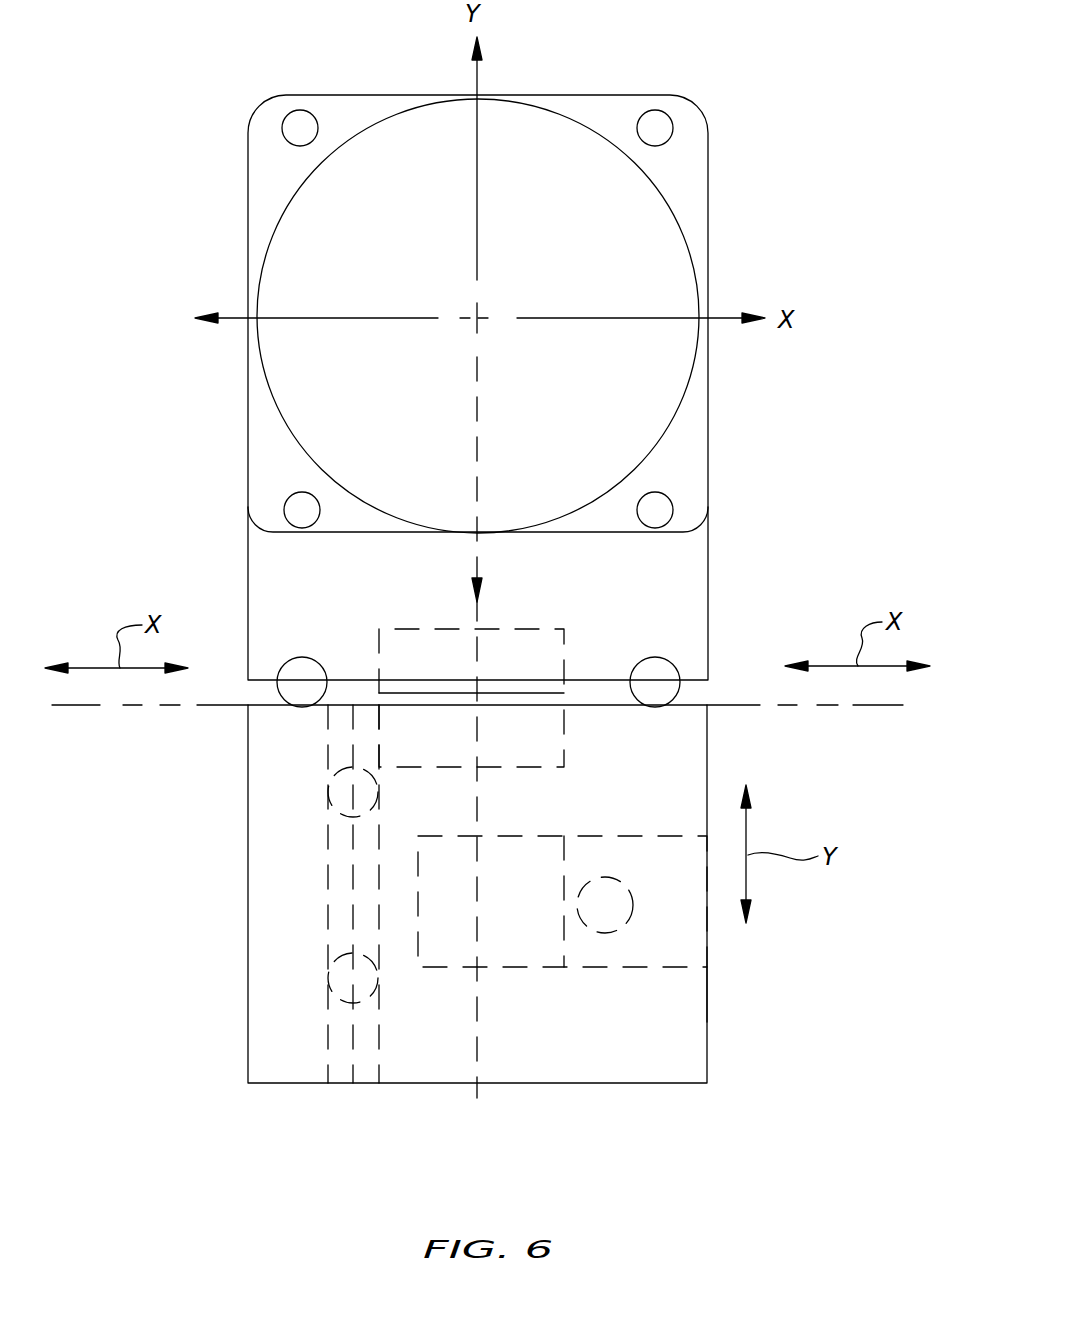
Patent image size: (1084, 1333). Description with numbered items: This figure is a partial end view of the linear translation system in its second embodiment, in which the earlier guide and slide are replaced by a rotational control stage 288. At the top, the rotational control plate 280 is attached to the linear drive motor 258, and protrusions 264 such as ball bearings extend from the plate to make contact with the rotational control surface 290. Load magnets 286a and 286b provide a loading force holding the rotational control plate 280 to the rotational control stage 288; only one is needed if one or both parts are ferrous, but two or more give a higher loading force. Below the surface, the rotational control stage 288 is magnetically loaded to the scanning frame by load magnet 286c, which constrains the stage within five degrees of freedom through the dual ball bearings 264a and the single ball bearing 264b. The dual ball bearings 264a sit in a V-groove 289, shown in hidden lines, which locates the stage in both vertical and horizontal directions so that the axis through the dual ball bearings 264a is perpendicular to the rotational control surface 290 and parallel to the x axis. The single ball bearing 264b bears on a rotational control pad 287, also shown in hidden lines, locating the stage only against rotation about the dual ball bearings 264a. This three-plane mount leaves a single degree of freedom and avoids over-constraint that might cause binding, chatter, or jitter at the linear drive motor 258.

The linear drive motor 258 is at (660, 190).
The rotational control plate 280 is at (708, 576).
The protrusions 264 is at (302, 657).
The dual ball bearings 264a is at (322, 802).
The single ball bearing 264b is at (673, 665).
The load magnet 286a is at (564, 629).
The load magnet 286b is at (565, 752).
The load magnet 286c is at (530, 967).
The rotational control pad 287 is at (683, 967).
The rotational control stage 288 is at (707, 1068).
The V-groove 289 is at (328, 1028).
The rotational control surface 290 is at (700, 702).